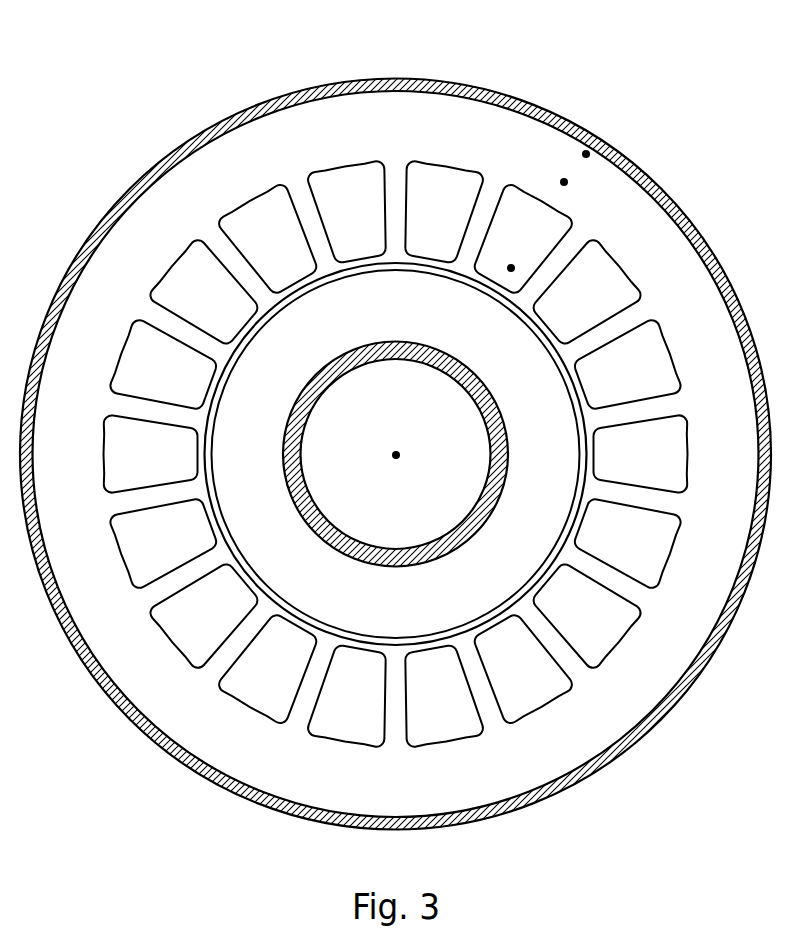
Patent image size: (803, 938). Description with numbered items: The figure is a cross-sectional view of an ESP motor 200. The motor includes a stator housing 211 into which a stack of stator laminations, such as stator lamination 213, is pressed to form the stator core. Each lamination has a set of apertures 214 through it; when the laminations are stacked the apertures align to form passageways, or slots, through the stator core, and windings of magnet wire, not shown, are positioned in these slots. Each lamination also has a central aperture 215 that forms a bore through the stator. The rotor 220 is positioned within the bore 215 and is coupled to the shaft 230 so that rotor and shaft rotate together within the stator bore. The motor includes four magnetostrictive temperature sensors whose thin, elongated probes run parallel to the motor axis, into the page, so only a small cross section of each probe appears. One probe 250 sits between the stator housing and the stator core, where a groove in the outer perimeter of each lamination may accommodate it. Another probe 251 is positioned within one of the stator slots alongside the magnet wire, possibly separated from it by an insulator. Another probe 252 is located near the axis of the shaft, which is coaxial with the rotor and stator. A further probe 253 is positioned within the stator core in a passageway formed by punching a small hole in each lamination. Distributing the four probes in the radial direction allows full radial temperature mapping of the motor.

The electric motor 200 is at (626, 94).
The stator housing 211 is at (692, 223).
The stator lamination 213 is at (470, 98).
The aperture 214 is at (298, 242).
The central aperture 215 is at (583, 490).
The rotor 220 is at (532, 372).
The shaft 230 is at (508, 442).
The probe 250 is at (586, 154).
The probe 251 is at (511, 268).
The probe 252 is at (396, 455).
The probe 253 is at (564, 182).